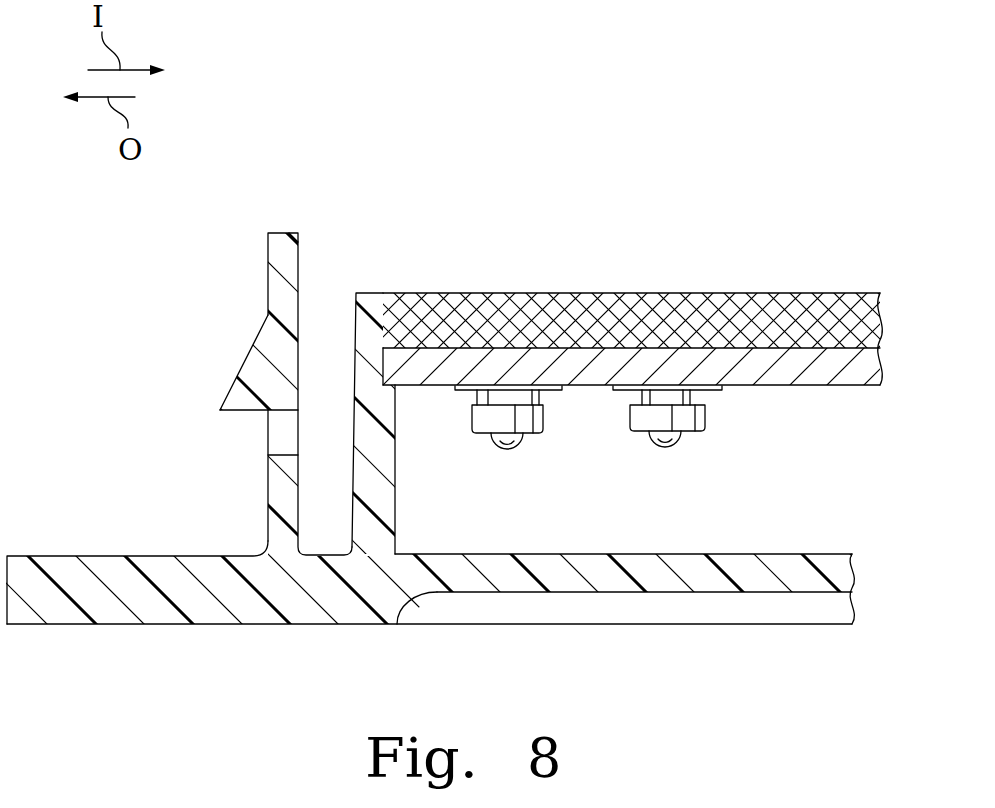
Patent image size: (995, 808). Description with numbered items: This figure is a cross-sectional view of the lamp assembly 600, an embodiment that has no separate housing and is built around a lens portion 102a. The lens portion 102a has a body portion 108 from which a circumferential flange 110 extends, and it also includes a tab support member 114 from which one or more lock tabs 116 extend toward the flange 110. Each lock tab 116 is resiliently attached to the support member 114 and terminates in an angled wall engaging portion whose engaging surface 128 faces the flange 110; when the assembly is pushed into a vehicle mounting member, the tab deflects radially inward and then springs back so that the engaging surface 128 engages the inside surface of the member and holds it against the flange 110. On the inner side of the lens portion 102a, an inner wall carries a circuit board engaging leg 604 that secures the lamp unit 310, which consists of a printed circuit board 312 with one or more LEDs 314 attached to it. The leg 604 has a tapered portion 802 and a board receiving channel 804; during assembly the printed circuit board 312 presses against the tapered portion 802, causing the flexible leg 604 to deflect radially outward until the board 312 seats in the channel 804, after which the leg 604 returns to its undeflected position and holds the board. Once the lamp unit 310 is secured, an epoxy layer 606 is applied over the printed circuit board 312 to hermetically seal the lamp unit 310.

The lens portion 102a is at (497, 453).
The circumferential flange 110 is at (115, 608).
The body portion 108 is at (463, 577).
The tab support member 114 is at (497, 412).
The lock tab 116 is at (238, 344).
The engaging surface 128 is at (222, 411).
The circuit board engaging leg 604 is at (356, 293).
The lamp assembly 600 is at (641, 327).
The epoxy layer 606 is at (641, 314).
The tapered portion 802 is at (418, 307).
The board receiving channel 804 is at (394, 378).
The printed circuit board 312 is at (642, 416).
The LED 314 is at (531, 428).
The lamp unit 310 is at (730, 410).